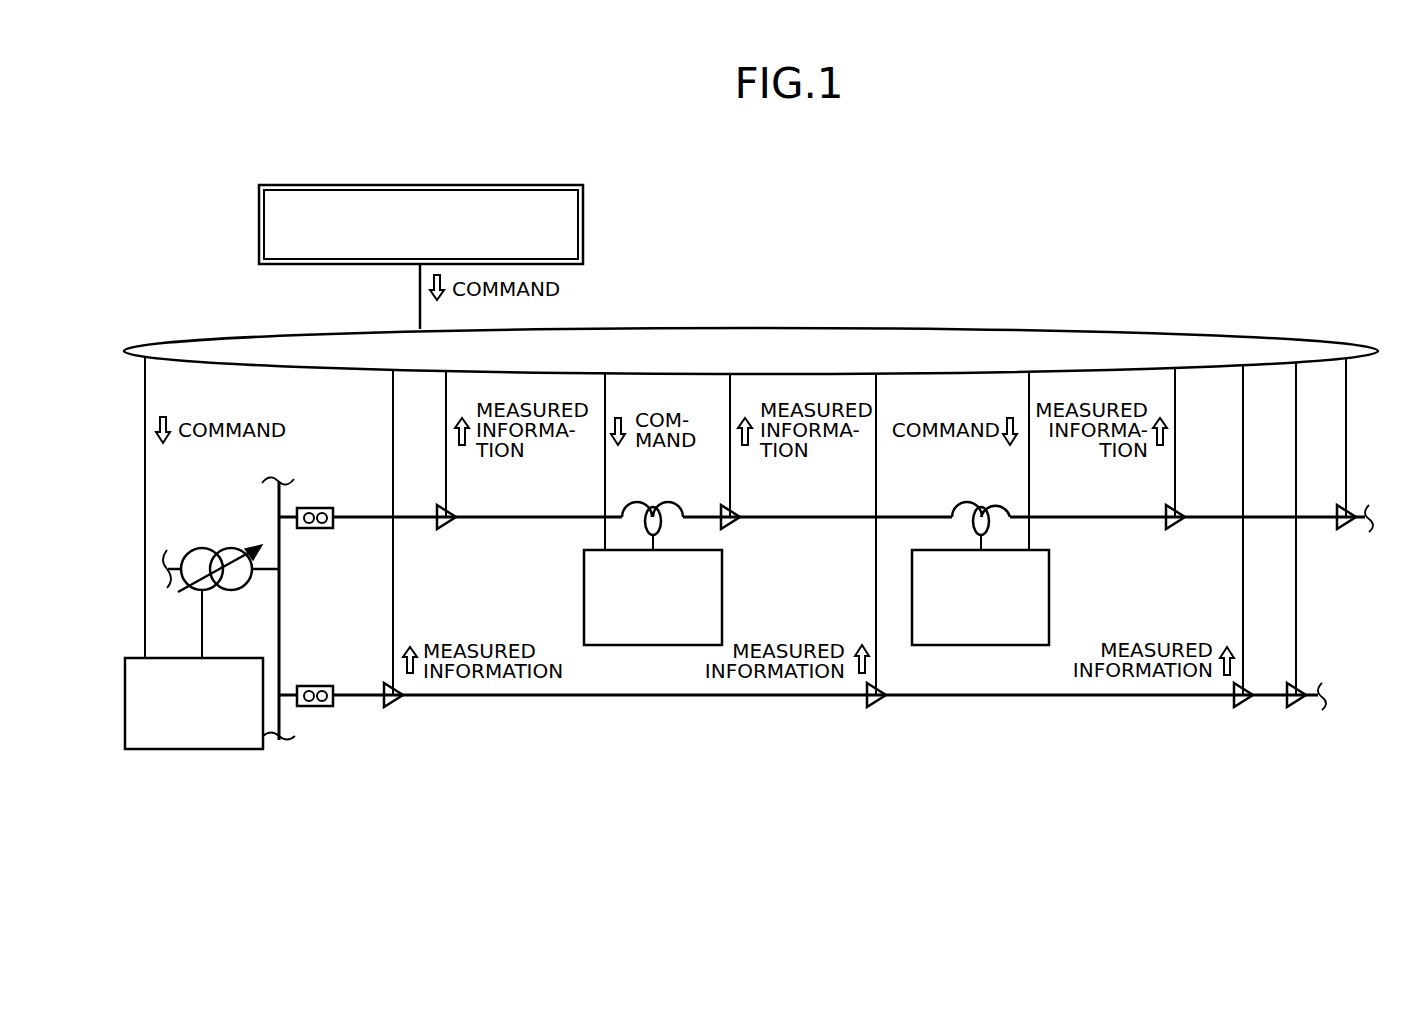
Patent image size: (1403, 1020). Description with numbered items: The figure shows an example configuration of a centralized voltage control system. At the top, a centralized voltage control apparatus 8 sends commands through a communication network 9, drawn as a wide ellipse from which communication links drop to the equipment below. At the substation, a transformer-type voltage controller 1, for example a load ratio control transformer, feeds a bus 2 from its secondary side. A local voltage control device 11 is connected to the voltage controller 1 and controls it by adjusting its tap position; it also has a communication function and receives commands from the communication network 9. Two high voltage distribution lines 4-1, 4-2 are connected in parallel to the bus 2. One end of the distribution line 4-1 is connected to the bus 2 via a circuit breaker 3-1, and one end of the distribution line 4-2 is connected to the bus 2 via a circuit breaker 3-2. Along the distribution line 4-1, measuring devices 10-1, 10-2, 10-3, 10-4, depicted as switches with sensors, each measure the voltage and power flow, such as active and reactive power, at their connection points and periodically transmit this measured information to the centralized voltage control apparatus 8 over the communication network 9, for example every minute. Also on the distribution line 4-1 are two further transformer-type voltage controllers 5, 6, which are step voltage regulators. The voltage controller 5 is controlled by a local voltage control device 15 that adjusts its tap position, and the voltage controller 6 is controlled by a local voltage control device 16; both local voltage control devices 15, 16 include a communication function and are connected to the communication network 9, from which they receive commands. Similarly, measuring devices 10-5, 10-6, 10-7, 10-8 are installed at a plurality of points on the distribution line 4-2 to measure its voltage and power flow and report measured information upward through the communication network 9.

The centralized voltage control apparatus 8 is at (420, 185).
The communication network 9 is at (717, 328).
The voltage controller 1 is at (236, 590).
The bus 2 is at (279, 496).
The circuit breaker 3-1 is at (314, 506).
The circuit breaker 3-2 is at (315, 683).
The distribution line 4-1 is at (369, 522).
The distribution line 4-2 is at (633, 700).
The voltage controller 5 is at (686, 504).
The voltage controller 6 is at (952, 501).
The measuring device 10-1 is at (447, 531).
The measuring device 10-2 is at (738, 526).
The measuring device 10-3 is at (1178, 531).
The measuring device 10-4 is at (1349, 531).
The measuring device 10-5 is at (398, 709).
The measuring device 10-6 is at (879, 709).
The measuring device 10-7 is at (1240, 710).
The measuring device 10-8 is at (1299, 709).
The local voltage control device 11 is at (193, 752).
The local voltage control device 15 is at (722, 582).
The local voltage control device 16 is at (1049, 594).